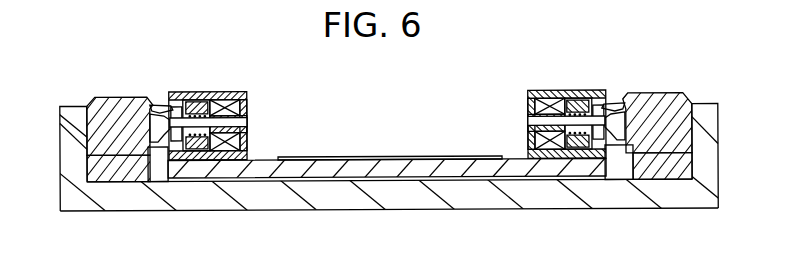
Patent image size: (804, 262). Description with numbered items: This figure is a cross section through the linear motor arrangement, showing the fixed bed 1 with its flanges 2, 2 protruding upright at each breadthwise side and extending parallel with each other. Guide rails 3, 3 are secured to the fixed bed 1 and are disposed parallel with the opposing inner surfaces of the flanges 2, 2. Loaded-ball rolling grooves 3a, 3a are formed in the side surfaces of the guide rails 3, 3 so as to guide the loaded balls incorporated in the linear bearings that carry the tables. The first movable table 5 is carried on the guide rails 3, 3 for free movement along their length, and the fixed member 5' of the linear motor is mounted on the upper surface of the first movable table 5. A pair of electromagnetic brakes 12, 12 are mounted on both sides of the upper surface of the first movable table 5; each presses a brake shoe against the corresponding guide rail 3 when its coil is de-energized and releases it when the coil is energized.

The fixed bed 1 is at (297, 203).
The flange 2 is at (59, 144).
The guide rail 3 is at (122, 103).
The loaded-ball rolling groove 3a is at (624, 108).
The first movable table 5 is at (390, 134).
The fixed member 5' is at (390, 128).
The electromagnetic brake 12 is at (213, 91).